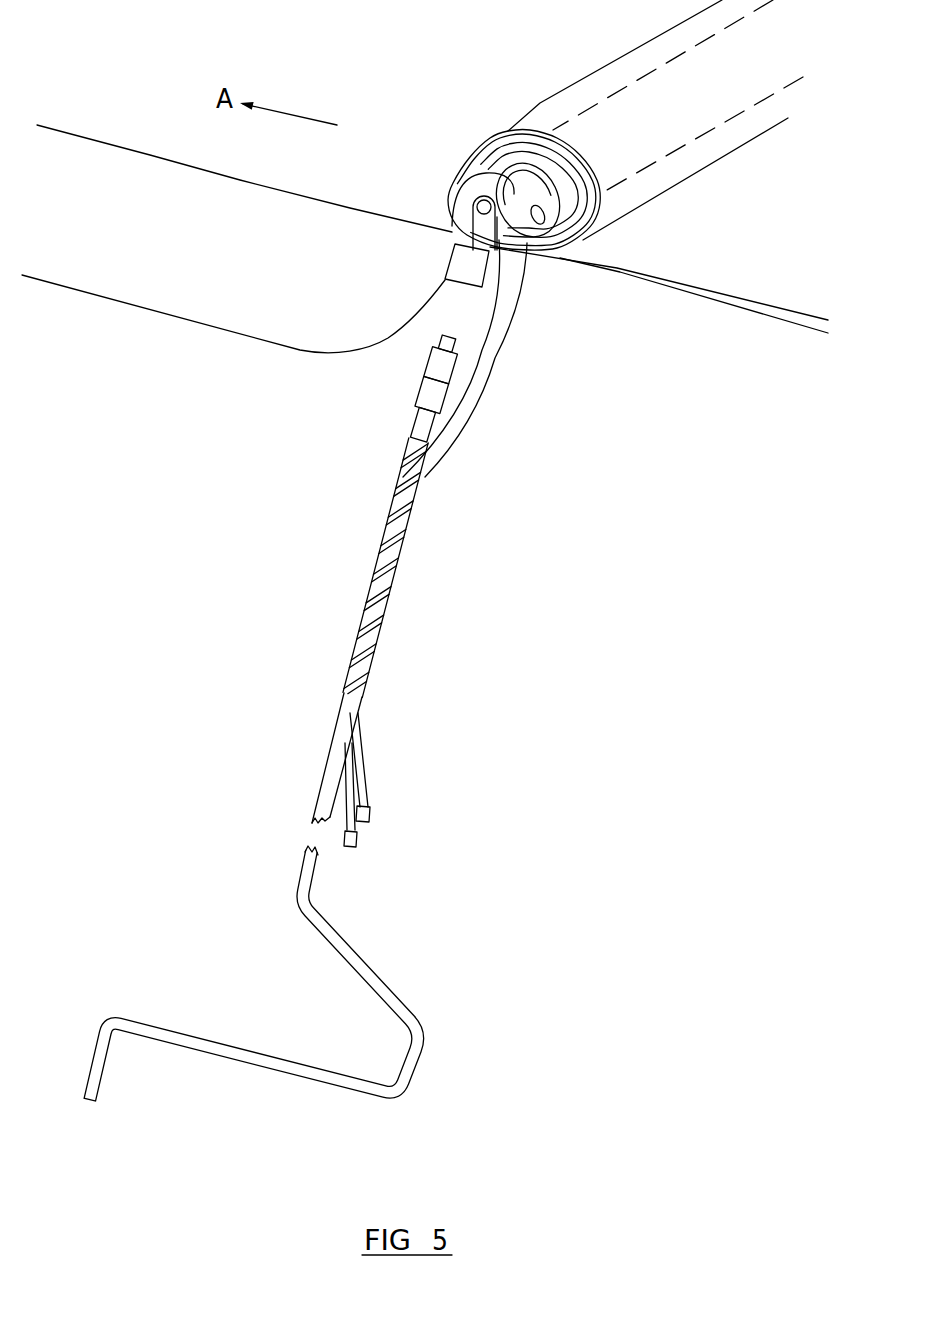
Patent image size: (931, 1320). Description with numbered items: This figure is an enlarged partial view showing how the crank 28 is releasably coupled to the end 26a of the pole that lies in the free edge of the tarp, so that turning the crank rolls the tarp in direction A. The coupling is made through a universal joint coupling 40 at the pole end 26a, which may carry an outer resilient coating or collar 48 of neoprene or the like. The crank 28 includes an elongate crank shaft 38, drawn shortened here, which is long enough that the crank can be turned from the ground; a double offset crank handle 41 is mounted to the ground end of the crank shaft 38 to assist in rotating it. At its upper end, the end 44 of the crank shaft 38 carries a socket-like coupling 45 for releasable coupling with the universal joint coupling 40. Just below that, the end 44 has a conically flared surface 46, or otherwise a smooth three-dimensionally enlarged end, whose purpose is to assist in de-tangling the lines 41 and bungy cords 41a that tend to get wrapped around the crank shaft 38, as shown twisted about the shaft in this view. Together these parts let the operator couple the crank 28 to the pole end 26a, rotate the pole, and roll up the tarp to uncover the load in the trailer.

The end of pole 26a is at (512, 161).
The universal joint coupling 40 is at (442, 213).
The outer resilient coating or collar 48 is at (485, 280).
The double offset crank handle 41 is at (518, 283).
The socket-like coupling 45 is at (428, 338).
The end of crank shaft 44 is at (417, 377).
The conically flared surface 46 is at (417, 410).
The crank shaft 38 is at (358, 693).
The bungy cords 41a is at (362, 767).
The crank 28 is at (473, 945).